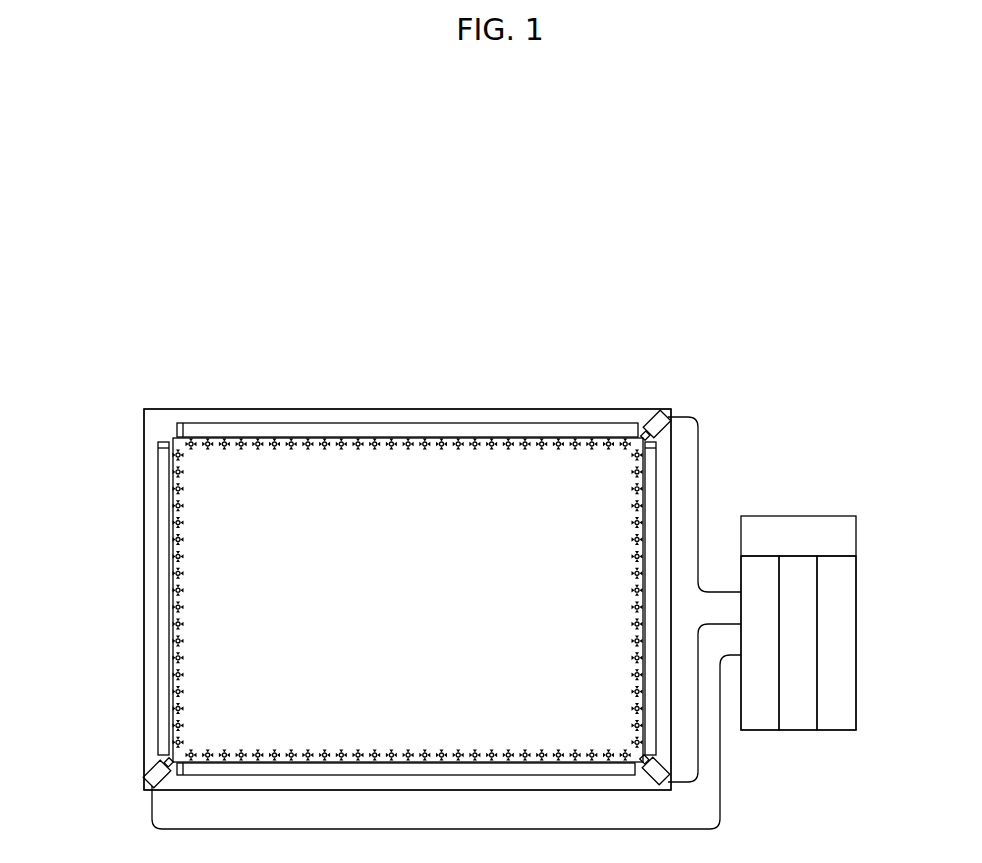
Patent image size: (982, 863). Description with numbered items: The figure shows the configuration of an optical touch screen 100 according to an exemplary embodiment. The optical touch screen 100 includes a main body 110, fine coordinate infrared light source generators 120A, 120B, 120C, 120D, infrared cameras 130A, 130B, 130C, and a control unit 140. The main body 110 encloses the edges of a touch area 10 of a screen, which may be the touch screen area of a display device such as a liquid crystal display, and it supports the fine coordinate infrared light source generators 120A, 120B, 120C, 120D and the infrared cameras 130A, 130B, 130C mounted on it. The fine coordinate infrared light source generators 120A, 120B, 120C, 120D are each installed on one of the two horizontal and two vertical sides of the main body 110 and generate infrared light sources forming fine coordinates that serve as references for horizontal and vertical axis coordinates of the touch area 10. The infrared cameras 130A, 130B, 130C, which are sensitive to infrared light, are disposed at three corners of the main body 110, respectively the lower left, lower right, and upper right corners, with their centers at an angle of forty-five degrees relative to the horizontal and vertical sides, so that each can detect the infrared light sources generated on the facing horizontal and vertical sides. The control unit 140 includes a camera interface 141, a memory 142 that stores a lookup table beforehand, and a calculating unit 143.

The optical touch screen 100 is at (556, 303).
The main body 110 is at (530, 408).
The touch area 10 is at (417, 470).
The fine coordinate infrared light source generator 120A is at (313, 423).
The fine coordinate infrared light source generator 120B is at (657, 465).
The fine coordinate infrared light source generator 120C is at (240, 776).
The fine coordinate infrared light source generator 120D is at (158, 580).
The infrared camera 130A is at (147, 776).
The infrared camera 130B is at (657, 788).
The infrared camera 130C is at (657, 412).
The control unit 140 is at (798, 623).
The camera interface 141 is at (760, 643).
The memory 142 is at (798, 643).
The calculating unit 143 is at (836, 643).